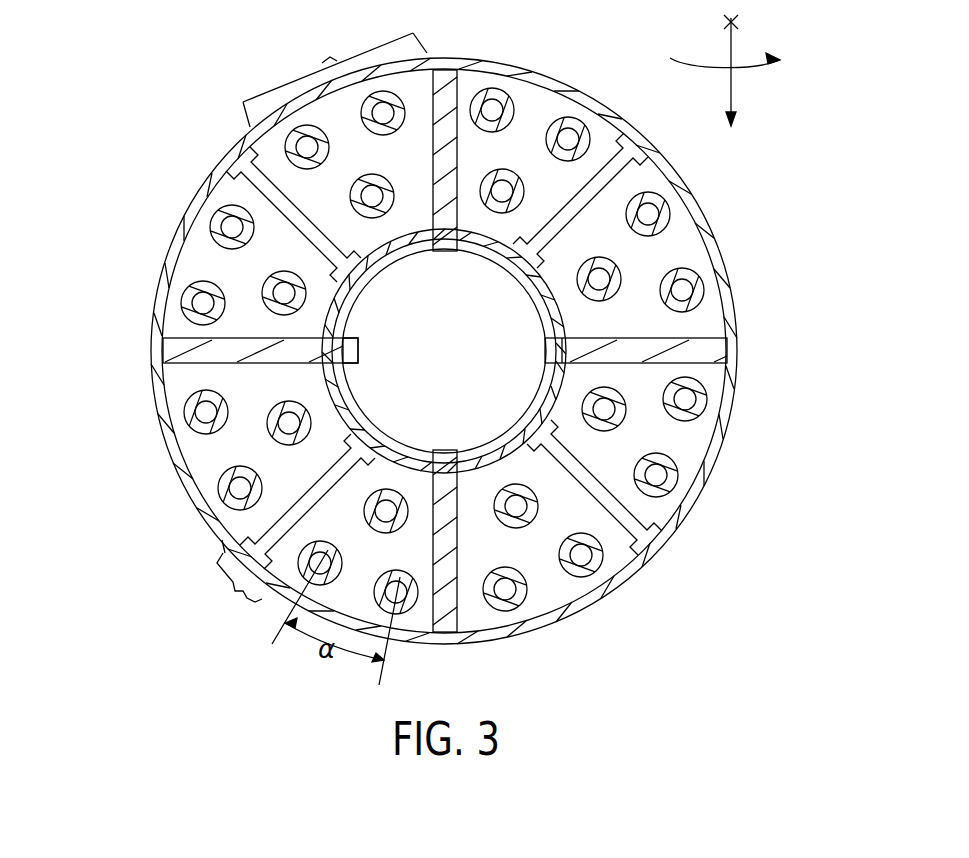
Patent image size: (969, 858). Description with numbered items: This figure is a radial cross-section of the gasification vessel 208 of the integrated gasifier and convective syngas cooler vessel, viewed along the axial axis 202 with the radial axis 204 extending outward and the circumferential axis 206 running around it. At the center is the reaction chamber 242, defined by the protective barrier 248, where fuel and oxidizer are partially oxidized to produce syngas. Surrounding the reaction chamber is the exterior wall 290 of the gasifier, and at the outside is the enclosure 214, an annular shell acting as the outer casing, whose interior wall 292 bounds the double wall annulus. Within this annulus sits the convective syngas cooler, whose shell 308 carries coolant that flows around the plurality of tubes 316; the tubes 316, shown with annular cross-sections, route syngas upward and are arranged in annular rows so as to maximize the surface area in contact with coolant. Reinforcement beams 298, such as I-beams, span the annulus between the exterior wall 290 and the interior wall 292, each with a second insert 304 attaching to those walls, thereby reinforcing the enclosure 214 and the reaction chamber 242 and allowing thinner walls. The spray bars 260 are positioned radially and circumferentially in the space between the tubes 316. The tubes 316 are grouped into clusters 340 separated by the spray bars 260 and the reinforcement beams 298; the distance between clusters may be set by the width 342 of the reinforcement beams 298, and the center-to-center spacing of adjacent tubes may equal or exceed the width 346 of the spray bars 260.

The gasification vessel 208 is at (135, 49).
The axial axis 202 is at (738, 25).
The radial axis 204 is at (728, 44).
The circumferential axis 206 is at (762, 80).
The enclosure 214 is at (247, 153).
The spray bars 260 is at (456, 74).
The shell 308 is at (542, 108).
The second insert 304 is at (622, 527).
The interior wall 292 is at (690, 234).
The reinforcement beams 298 is at (280, 222).
The tubes 316 is at (212, 229).
The protective barrier 248 is at (388, 253).
The exterior wall 290 is at (570, 325).
The reaction chamber 242 is at (470, 364).
The width of the spray bars 346 is at (362, 352).
The clusters 340 is at (335, 78).
The width of the reinforcement beams 342 is at (231, 582).